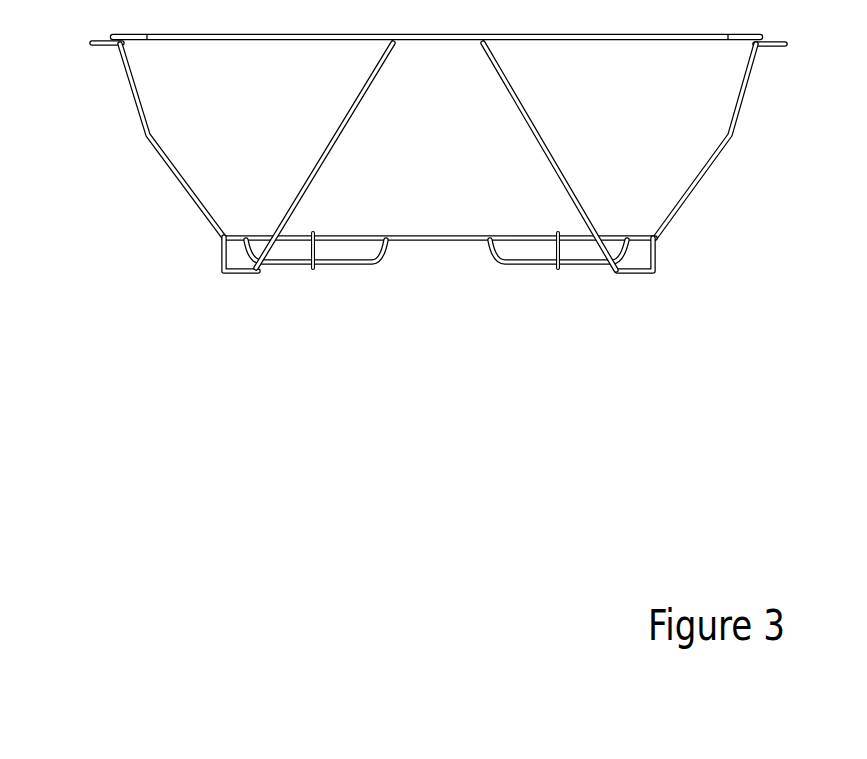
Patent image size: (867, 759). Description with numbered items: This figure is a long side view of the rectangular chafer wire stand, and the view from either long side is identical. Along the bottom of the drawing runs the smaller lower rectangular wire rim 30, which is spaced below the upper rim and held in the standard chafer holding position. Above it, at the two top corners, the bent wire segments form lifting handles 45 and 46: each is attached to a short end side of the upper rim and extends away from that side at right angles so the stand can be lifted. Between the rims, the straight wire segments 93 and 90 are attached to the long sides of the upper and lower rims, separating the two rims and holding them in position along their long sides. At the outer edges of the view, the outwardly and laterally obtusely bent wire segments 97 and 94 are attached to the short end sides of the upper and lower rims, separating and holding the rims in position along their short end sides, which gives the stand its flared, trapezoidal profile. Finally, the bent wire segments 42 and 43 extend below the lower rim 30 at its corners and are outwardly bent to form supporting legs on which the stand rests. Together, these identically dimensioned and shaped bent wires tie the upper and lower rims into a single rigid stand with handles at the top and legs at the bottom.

The lower rectangular wire rim 30 is at (347, 240).
The supporting leg 42 is at (241, 275).
The supporting leg 43 is at (636, 275).
The lifting handle 45 is at (93, 46).
The lifting handle 46 is at (766, 47).
The straight wire segment 90 is at (534, 139).
The straight wire segment 93 is at (322, 162).
The obtusely bent wire segment 94 is at (706, 165).
The obtusely bent wire segment 97 is at (172, 177).